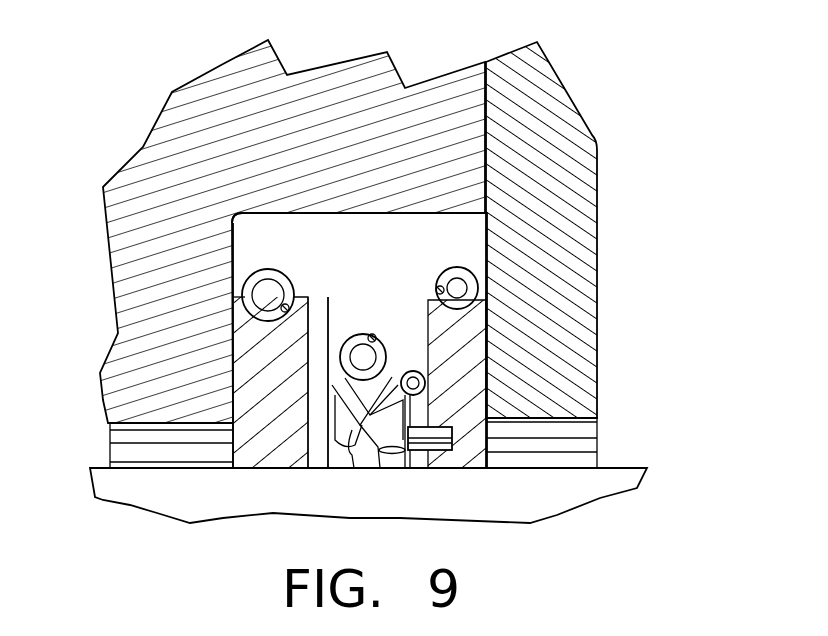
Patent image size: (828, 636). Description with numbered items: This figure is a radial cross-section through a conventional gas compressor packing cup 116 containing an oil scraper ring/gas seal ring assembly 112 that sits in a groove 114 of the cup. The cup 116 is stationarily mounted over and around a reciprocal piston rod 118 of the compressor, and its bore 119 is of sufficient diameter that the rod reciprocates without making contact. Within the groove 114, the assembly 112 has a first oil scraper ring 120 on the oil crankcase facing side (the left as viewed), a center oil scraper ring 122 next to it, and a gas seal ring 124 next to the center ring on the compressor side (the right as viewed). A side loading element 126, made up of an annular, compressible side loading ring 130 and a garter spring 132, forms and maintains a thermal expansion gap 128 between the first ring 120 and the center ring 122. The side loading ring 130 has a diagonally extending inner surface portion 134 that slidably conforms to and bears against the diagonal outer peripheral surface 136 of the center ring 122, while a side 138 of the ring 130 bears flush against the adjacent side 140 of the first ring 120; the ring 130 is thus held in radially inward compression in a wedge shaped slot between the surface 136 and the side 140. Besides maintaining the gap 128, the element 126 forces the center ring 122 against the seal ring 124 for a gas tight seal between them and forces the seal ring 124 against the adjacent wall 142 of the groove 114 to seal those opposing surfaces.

The oil scraper ring/gas seal ring assembly 112 is at (405, 273).
The groove 114 is at (237, 258).
The gas compressor packing cup 116 is at (435, 92).
The reciprocal piston rod 118 is at (618, 472).
The bore 119 is at (543, 422).
The first oil scraper ring 120 is at (262, 440).
The center oil scraper ring 122 is at (397, 442).
The gas seal ring 124 is at (483, 440).
The side loading element 126 is at (233, 433).
The thermal expansion gap 128 is at (373, 443).
The side loading ring 130 is at (318, 400).
The garter spring 132 is at (390, 357).
The inner surface portion 134 is at (467, 450).
The outer peripheral surface 136 is at (374, 334).
The side 138 is at (337, 350).
The side 140 is at (333, 300).
The wall 142 is at (485, 228).